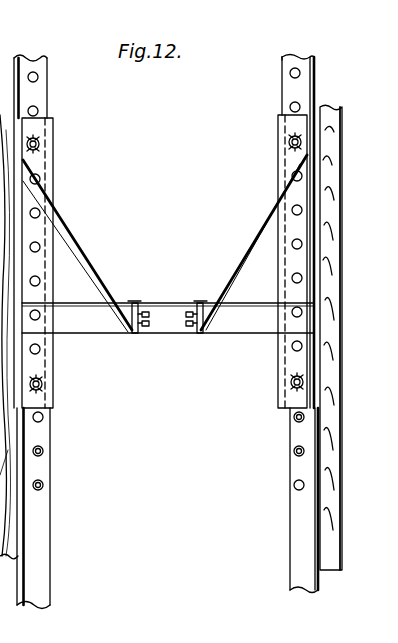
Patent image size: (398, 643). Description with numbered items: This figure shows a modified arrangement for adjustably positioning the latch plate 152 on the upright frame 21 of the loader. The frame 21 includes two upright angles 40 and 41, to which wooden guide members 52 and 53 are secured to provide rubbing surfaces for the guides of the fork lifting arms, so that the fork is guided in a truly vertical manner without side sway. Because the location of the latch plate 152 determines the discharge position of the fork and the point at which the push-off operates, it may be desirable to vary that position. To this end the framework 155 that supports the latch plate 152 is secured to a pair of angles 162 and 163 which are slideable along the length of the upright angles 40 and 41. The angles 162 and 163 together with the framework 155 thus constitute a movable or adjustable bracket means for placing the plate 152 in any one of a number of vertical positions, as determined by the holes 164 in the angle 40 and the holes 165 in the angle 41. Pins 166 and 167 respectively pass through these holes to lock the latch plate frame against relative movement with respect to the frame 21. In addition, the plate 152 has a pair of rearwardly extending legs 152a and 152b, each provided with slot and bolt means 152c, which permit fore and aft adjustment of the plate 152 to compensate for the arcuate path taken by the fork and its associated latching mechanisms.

The frame 21 is at (304, 52).
The upright angle 40 is at (298, 532).
The upright angle 41 is at (38, 550).
The wooden guide member 52 is at (330, 552).
The wooden guide member 53 is at (8, 518).
The latch plate 152 is at (168, 331).
The rearwardly extending leg 152a is at (152, 318).
The rearwardly extending leg 152b is at (187, 334).
The slot and bolt means 152c is at (147, 300).
The framework 155 is at (92, 315).
The angle 162 is at (292, 158).
The angle 163 is at (42, 166).
The holes 164 is at (295, 450).
The holes 165 is at (46, 487).
The pin 166 is at (290, 138).
The pin 167 is at (40, 141).